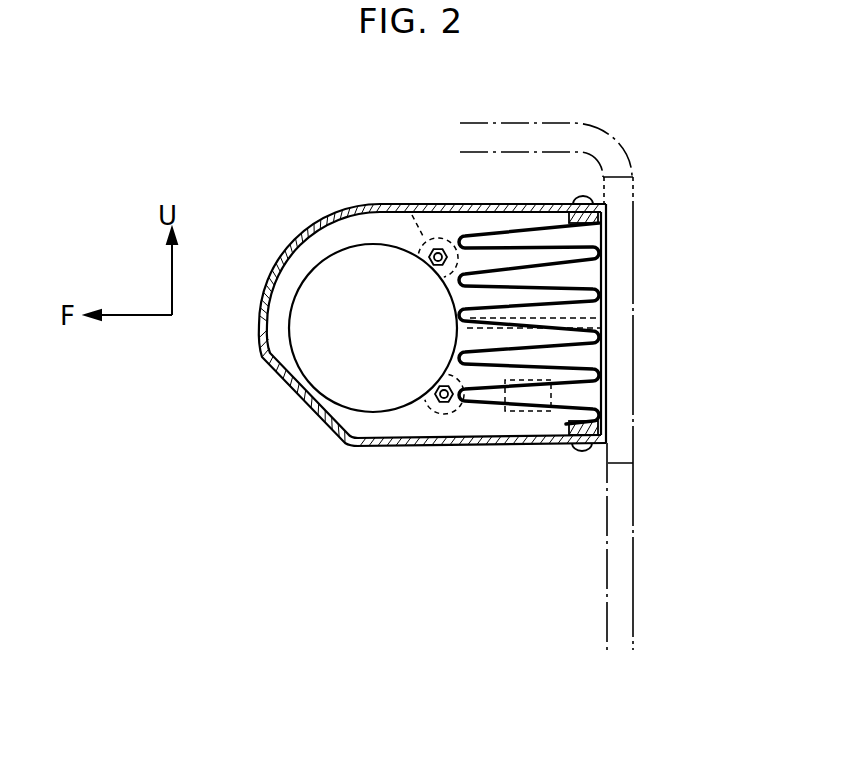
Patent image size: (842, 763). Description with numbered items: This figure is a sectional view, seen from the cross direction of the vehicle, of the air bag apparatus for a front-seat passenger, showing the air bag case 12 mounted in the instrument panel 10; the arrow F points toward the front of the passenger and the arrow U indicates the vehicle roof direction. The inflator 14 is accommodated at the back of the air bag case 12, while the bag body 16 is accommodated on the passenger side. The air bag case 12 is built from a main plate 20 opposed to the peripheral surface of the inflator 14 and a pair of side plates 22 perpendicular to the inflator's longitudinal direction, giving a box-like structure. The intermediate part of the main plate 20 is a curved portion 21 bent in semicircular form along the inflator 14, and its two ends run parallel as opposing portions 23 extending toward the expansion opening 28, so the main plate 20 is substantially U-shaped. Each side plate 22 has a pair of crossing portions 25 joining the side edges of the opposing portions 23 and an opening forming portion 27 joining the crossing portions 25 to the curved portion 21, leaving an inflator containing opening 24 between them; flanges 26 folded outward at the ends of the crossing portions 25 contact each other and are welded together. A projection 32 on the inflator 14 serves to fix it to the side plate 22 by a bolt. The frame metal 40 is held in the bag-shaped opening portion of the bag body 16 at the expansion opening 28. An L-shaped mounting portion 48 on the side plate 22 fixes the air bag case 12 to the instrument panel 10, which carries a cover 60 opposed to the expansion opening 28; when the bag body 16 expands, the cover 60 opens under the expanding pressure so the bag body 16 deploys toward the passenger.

The instrument panel 10 is at (620, 508).
The air bag case 12 is at (412, 452).
The inflator 14 is at (343, 382).
The bag body 16 is at (562, 425).
The main plate 20 is at (388, 448).
The curved portion 21 is at (266, 405).
The side plates 22 is at (340, 438).
The opposing portions 23 is at (465, 450).
The inflator containing opening 24 is at (333, 252).
The crossing portions 25 is at (512, 222).
The flanges 26 is at (456, 344).
The opening forming portion 27 is at (258, 333).
The expansion opening 28 is at (608, 262).
The projections 32 is at (407, 205).
The frame metal 40 is at (608, 215).
The mounting portion 48 is at (523, 411).
The cover 60 is at (620, 372).